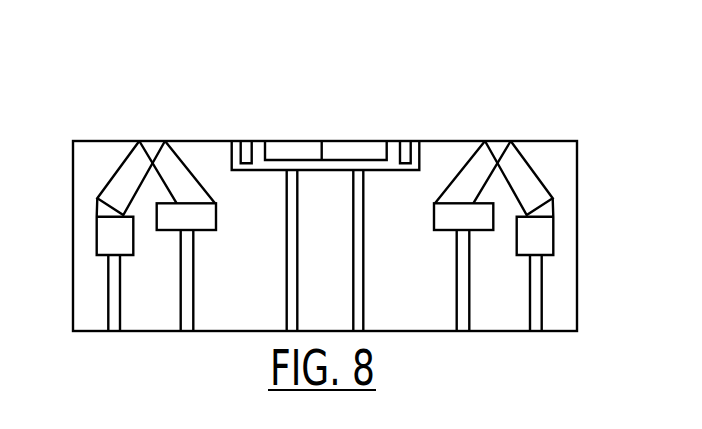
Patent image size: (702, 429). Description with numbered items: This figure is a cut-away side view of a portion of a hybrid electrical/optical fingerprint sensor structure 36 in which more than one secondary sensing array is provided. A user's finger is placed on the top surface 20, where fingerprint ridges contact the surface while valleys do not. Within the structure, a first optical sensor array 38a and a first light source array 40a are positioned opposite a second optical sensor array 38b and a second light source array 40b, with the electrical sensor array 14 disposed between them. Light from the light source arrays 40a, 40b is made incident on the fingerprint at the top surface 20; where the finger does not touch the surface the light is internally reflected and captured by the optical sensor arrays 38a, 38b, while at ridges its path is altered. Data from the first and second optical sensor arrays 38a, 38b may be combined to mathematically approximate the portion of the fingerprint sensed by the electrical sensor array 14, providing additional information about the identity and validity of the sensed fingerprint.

The sensor assembly 36 is at (113, 104).
The top surface 20 is at (540, 140).
The electrical sensor array 14 is at (372, 127).
The first optical sensor array 38a is at (213, 338).
The first light source array 40a is at (133, 338).
The second optical sensor array 38b is at (490, 338).
The second light source array 40b is at (555, 338).